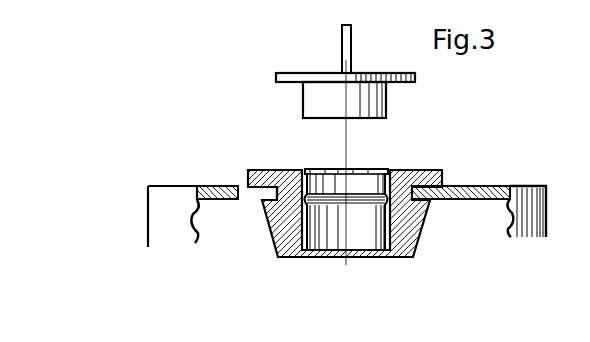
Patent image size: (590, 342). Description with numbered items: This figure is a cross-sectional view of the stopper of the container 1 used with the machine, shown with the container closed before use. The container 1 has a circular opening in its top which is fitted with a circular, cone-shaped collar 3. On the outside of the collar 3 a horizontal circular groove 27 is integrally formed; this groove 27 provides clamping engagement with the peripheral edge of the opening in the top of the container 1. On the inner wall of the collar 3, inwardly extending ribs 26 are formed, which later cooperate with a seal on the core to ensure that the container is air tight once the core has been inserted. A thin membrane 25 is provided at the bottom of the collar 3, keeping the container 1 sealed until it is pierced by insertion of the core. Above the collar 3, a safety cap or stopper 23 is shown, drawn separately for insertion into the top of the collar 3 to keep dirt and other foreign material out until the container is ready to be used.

The container 1 is at (154, 190).
The collar 3 is at (410, 227).
The safety cap or stopper 23 is at (367, 103).
The thin membrane 25 is at (372, 262).
The inwardly extending ribs 26 is at (316, 170).
The horizontal circular groove 27 is at (272, 194).